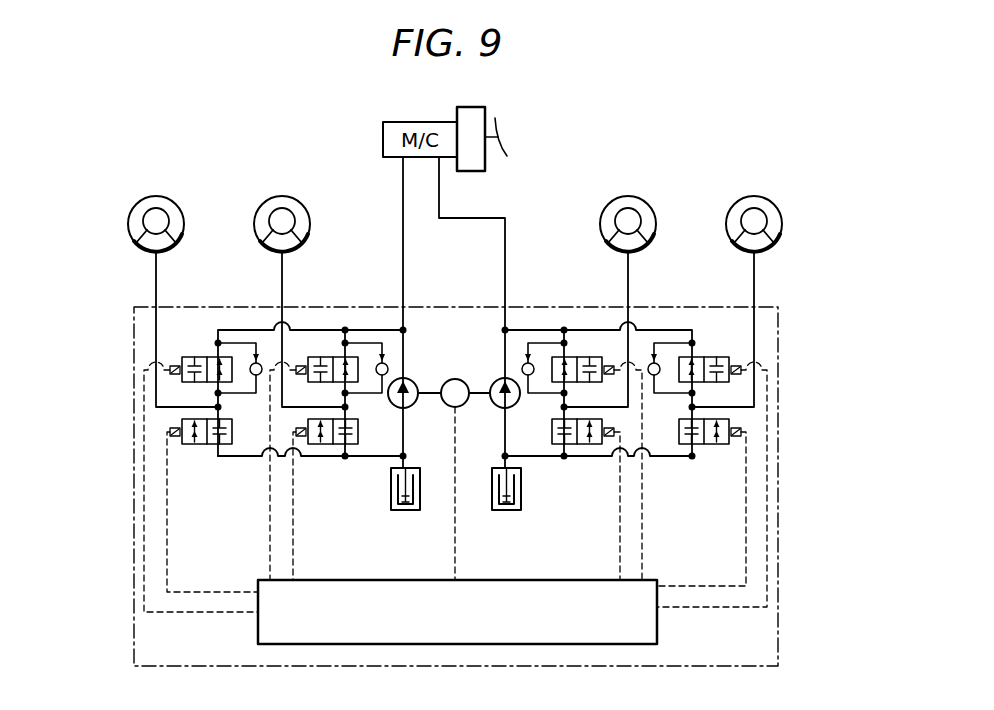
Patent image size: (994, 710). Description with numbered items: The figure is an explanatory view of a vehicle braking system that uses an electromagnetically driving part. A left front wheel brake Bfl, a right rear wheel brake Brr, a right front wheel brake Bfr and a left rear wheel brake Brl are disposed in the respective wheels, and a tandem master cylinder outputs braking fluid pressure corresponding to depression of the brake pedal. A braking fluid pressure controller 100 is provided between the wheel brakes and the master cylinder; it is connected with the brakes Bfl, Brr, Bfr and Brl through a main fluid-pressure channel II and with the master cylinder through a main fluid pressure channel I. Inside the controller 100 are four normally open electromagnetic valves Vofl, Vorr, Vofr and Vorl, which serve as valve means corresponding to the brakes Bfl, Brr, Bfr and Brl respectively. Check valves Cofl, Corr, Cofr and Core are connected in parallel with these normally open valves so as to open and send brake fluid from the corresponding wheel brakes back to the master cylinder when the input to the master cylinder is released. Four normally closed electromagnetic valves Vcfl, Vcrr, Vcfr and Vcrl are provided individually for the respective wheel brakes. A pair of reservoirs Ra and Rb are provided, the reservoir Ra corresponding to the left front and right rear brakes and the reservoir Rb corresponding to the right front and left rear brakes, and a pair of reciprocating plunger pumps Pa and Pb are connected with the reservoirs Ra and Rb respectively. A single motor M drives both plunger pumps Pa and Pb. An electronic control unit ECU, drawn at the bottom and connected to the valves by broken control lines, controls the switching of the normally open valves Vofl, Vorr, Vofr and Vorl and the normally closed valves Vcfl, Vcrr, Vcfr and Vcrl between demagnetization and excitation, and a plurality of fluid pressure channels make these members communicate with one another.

The braking fluid pressure controller 100 is at (783, 365).
The main fluid pressure channel I is at (402, 203).
The main fluid-pressure channel II is at (155, 273).
The left front wheel brake Bfl is at (145, 248).
The right rear wheel brake Brr is at (271, 248).
The right front wheel brake Bfr is at (643, 246).
The left rear wheel brake Brl is at (768, 246).
The normally open electromagnetic valve Vofl is at (185, 357).
The normally closed electromagnetic valve Vcfl is at (188, 445).
The normally open electromagnetic valve Vorr is at (313, 355).
The normally closed electromagnetic valve Vcrr is at (312, 446).
The normally open electromagnetic valve Vofr is at (568, 355).
The normally closed electromagnetic valve Vcfr is at (581, 445).
The normally open electromagnetic valve Vorl is at (704, 355).
The normally closed electromagnetic valve Vcrl is at (707, 445).
The check valve Cofl is at (255, 357).
The check valve Corr is at (382, 355).
The check valve Cofr is at (521, 369).
The rear left check valve Core is at (658, 375).
The reciprocating plunger pump Pa is at (396, 406).
The reciprocating plunger pump Pb is at (513, 406).
The braking fluid pressure controller motor M is at (454, 479).
The reservoir Ra is at (403, 511).
The reservoir Rb is at (505, 511).
The electronic control unit ECU is at (457, 612).